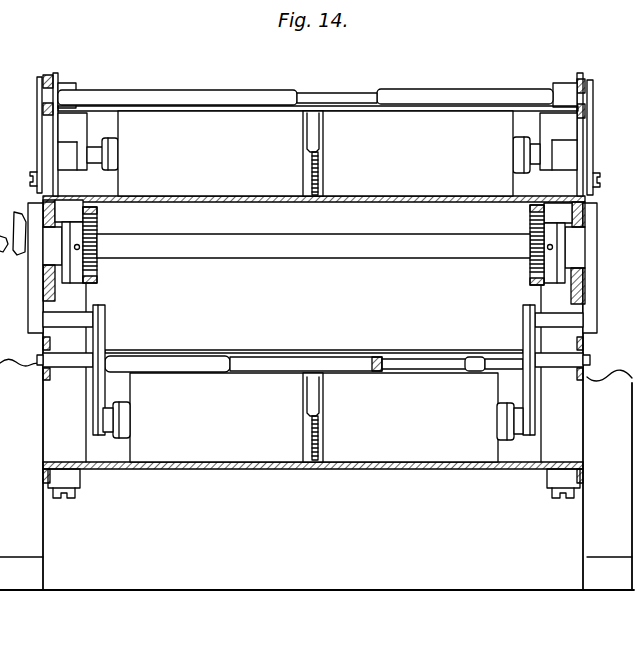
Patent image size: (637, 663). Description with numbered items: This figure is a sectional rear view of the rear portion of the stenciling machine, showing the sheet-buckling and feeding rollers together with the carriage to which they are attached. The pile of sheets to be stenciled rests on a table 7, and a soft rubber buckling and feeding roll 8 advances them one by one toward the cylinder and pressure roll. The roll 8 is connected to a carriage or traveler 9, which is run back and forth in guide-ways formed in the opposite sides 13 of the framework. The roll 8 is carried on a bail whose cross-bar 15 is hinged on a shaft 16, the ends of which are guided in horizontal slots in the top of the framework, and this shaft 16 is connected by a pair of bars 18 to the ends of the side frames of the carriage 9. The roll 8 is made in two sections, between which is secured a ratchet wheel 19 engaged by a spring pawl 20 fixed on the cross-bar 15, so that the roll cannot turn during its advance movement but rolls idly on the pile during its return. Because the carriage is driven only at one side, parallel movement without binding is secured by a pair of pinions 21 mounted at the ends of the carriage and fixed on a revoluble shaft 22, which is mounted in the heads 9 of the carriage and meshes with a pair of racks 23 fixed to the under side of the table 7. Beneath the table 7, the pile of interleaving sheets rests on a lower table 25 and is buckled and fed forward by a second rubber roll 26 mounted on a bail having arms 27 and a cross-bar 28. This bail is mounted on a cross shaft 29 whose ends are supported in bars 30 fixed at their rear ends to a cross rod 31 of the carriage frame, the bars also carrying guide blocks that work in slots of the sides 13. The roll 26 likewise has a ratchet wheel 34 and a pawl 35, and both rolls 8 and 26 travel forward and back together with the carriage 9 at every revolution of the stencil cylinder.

The table 7 is at (370, 202).
The buckling and feeding roll 8 is at (315, 153).
The carriage 9 is at (43, 258).
The sides of the framework 13 is at (52, 287).
The cross-bar 15 is at (352, 97).
The shaft 16 is at (428, 88).
The bars 18 is at (37, 138).
The ratchet wheel 19 is at (318, 178).
The spring pawl 20 is at (316, 135).
The pinions 21 is at (97, 281).
The revoluble shaft 22 is at (313, 248).
The racks 23 is at (98, 212).
The table 25 is at (340, 469).
The roll 26 is at (313, 417).
The arms 27 is at (104, 344).
The cross-bar 28 is at (358, 372).
The cross shaft 29 is at (208, 364).
The bars 30 is at (98, 330).
The cross rod 31 is at (62, 327).
The ratchet wheel 34 is at (312, 449).
The pawl 35 is at (303, 402).